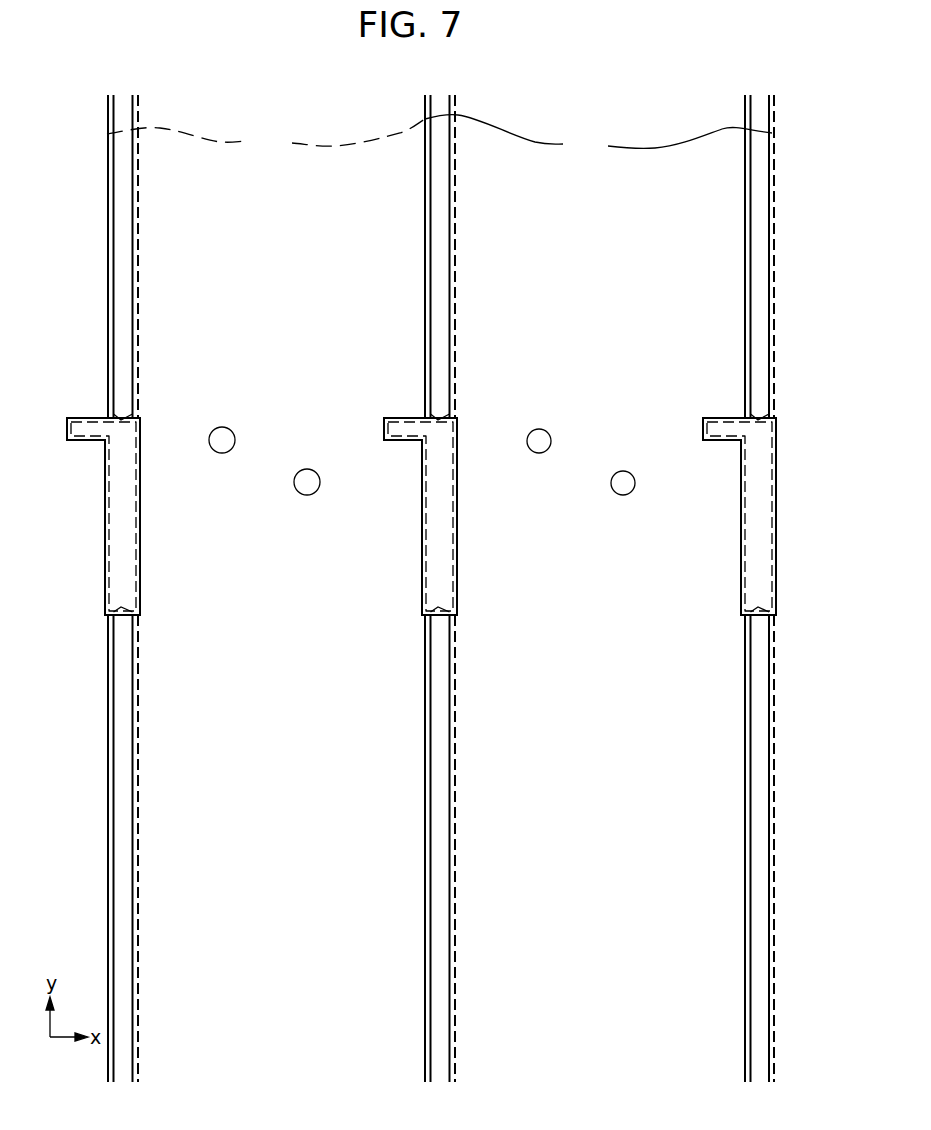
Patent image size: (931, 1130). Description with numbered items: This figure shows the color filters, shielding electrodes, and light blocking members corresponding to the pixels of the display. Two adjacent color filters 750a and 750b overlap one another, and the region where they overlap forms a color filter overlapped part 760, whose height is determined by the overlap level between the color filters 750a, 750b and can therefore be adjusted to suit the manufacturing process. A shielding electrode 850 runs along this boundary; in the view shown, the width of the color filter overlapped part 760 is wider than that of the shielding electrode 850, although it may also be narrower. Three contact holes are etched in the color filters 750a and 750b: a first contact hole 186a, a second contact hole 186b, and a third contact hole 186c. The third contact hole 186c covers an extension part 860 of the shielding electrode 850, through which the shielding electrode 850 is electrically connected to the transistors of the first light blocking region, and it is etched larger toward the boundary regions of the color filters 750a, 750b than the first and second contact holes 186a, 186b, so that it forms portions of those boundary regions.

The color filter 750a is at (266, 136).
The color filter 750b is at (598, 134).
The shielding electrode 850 is at (454, 107).
The color filter overlapped part 760 is at (425, 236).
The first contact hole 186a is at (222, 427).
The second contact hole 186b is at (306, 469).
The third contact hole 186c is at (385, 418).
The extension part 860 is at (386, 441).